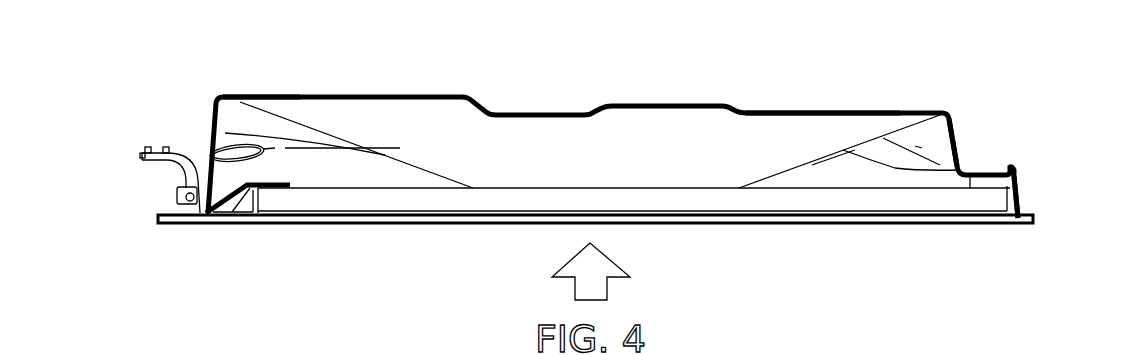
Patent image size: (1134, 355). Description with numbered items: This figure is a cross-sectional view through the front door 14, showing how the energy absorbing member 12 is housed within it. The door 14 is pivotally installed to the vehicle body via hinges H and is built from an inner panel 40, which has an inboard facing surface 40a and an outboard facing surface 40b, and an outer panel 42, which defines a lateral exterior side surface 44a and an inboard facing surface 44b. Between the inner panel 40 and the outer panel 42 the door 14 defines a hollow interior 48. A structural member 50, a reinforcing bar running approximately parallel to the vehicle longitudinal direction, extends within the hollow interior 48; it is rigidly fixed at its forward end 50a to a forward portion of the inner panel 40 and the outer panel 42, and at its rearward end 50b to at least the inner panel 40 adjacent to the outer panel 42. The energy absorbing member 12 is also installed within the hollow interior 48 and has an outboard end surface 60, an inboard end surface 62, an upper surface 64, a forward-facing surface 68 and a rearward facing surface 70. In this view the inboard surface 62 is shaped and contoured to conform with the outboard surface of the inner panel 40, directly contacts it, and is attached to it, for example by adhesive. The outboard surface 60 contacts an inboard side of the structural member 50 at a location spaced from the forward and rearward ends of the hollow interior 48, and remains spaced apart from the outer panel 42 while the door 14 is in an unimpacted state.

The energy absorbing member 12 is at (806, 172).
The front door 14 is at (876, 55).
The inner panel 40 is at (455, 95).
The inboard facing surface 40a is at (287, 96).
The outboard facing surface 40b is at (287, 99).
The outer panel 42 is at (352, 219).
The lateral exterior side surface 44a is at (740, 217).
The inboard facing surface 44b is at (761, 218).
The hollow interior 48 is at (938, 133).
The structural member 50 is at (433, 202).
The forward end 50a is at (233, 214).
The rearward end 50b is at (993, 200).
The outboard end surface 60 is at (523, 190).
The inboard end surface 62 is at (795, 111).
The upper surface 64 is at (618, 147).
The forward-facing surface 68 is at (387, 159).
The rearward facing surface 70 is at (843, 148).
The hinges H is at (160, 163).